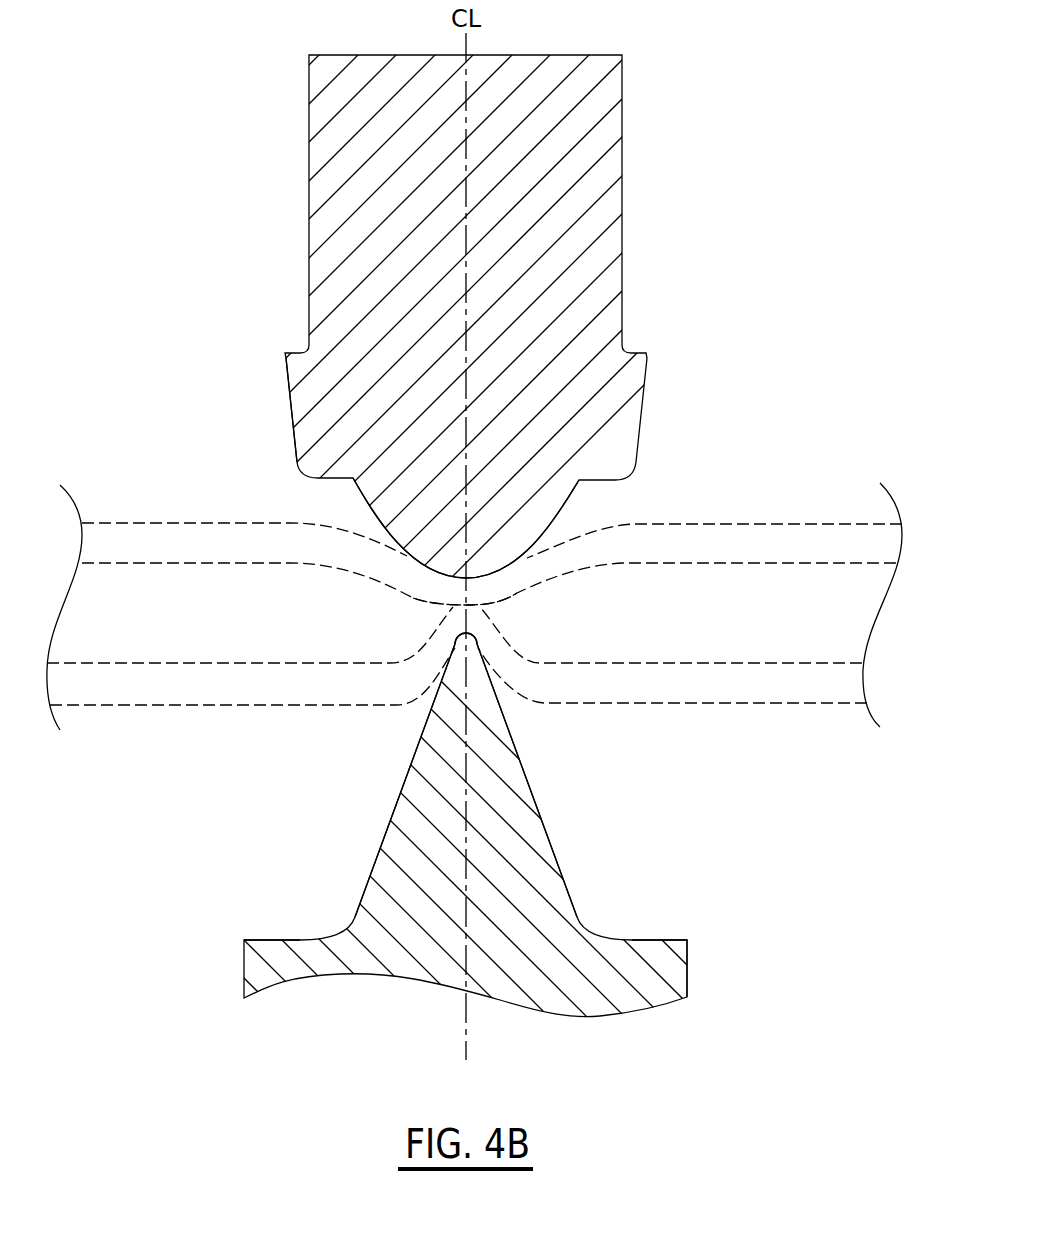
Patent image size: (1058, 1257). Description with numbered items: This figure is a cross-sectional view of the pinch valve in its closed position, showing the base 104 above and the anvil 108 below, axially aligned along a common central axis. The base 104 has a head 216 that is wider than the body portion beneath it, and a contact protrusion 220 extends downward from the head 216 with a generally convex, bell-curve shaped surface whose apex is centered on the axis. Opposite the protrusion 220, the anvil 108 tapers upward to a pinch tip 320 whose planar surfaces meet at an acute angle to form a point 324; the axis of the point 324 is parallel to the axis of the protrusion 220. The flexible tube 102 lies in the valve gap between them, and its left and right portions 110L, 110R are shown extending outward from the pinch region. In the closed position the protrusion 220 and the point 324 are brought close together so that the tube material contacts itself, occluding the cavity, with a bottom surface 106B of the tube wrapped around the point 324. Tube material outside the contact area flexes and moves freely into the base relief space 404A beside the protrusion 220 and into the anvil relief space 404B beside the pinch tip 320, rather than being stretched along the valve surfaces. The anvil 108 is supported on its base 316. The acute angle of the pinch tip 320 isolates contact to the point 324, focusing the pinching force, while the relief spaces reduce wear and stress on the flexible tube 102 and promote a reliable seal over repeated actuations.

The base 104 is at (245, 195).
The head 216 is at (291, 414).
The base relief space 404A is at (585, 508).
The flexible tube 102 is at (754, 523).
The left workpiece portion 110L is at (216, 629).
The right workpiece portion 110R is at (760, 631).
The protrusion 220 is at (417, 568).
The bottom surface of workpiece 106B is at (435, 607).
The point 324 is at (482, 636).
The anvil 108 is at (627, 888).
The anvil relief space 404B is at (510, 700).
The pinch tip 320 is at (375, 862).
The die base 316 is at (688, 973).